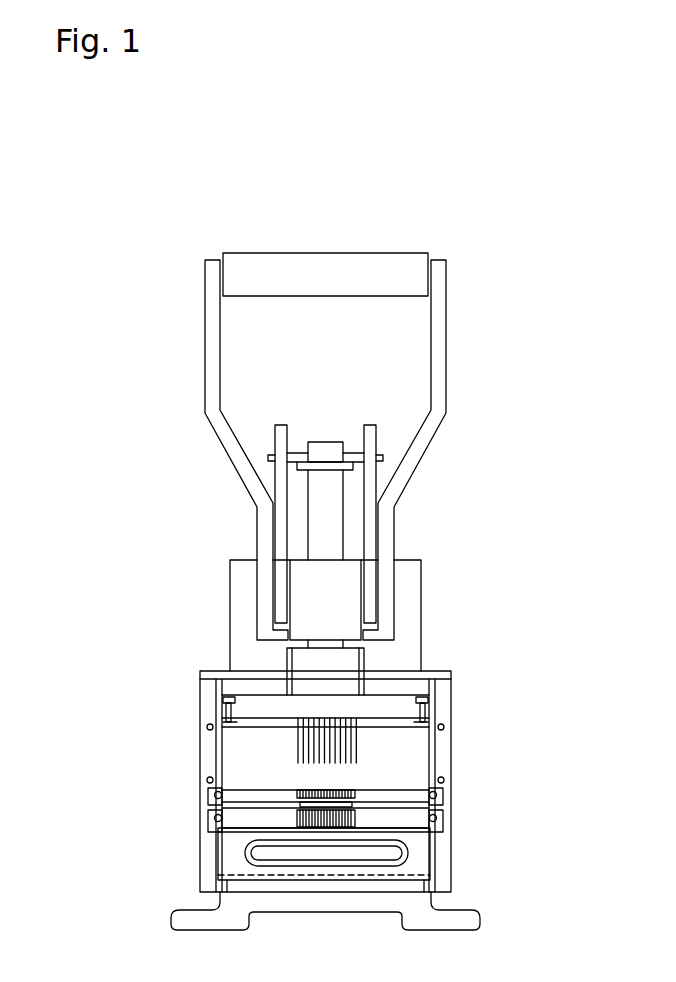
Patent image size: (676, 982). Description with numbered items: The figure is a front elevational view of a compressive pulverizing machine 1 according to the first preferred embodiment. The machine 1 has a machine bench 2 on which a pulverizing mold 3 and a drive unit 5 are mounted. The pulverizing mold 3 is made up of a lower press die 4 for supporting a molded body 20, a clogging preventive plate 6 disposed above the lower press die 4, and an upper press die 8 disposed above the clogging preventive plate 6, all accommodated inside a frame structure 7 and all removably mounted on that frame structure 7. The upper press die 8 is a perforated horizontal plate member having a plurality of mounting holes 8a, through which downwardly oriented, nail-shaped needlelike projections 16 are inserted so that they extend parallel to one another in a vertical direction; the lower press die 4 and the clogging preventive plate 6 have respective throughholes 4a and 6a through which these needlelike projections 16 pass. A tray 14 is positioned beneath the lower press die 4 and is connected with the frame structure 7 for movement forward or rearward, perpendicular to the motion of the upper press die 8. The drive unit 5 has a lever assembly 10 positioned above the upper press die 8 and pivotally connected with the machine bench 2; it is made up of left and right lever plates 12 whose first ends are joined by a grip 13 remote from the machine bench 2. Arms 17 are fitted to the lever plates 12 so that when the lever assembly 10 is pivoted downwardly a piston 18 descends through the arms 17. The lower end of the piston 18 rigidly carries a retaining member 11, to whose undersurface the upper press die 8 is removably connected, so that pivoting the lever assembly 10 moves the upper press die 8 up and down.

The compressive pulverizing machine 1 is at (484, 236).
The machine bench 2 is at (420, 597).
The pulverizing mold 3 is at (478, 674).
The lower press die 4 is at (233, 822).
The throughholes 4a is at (298, 813).
The drive unit 5 is at (216, 248).
The clogging preventive plate 6 is at (412, 793).
The throughholes 6a is at (360, 793).
The frame structure 7 is at (200, 692).
The upper press die 8 is at (237, 722).
The mounting holes 8a is at (357, 720).
The lever assembly 10 is at (205, 297).
The retaining member 11 is at (403, 702).
The lever plates 12 is at (210, 368).
The grip 13 is at (343, 265).
The tray 14 is at (418, 858).
The needlelike projections 16 is at (297, 745).
The arms 17 is at (278, 428).
The piston 18 is at (322, 483).
The molded body 20 is at (298, 803).